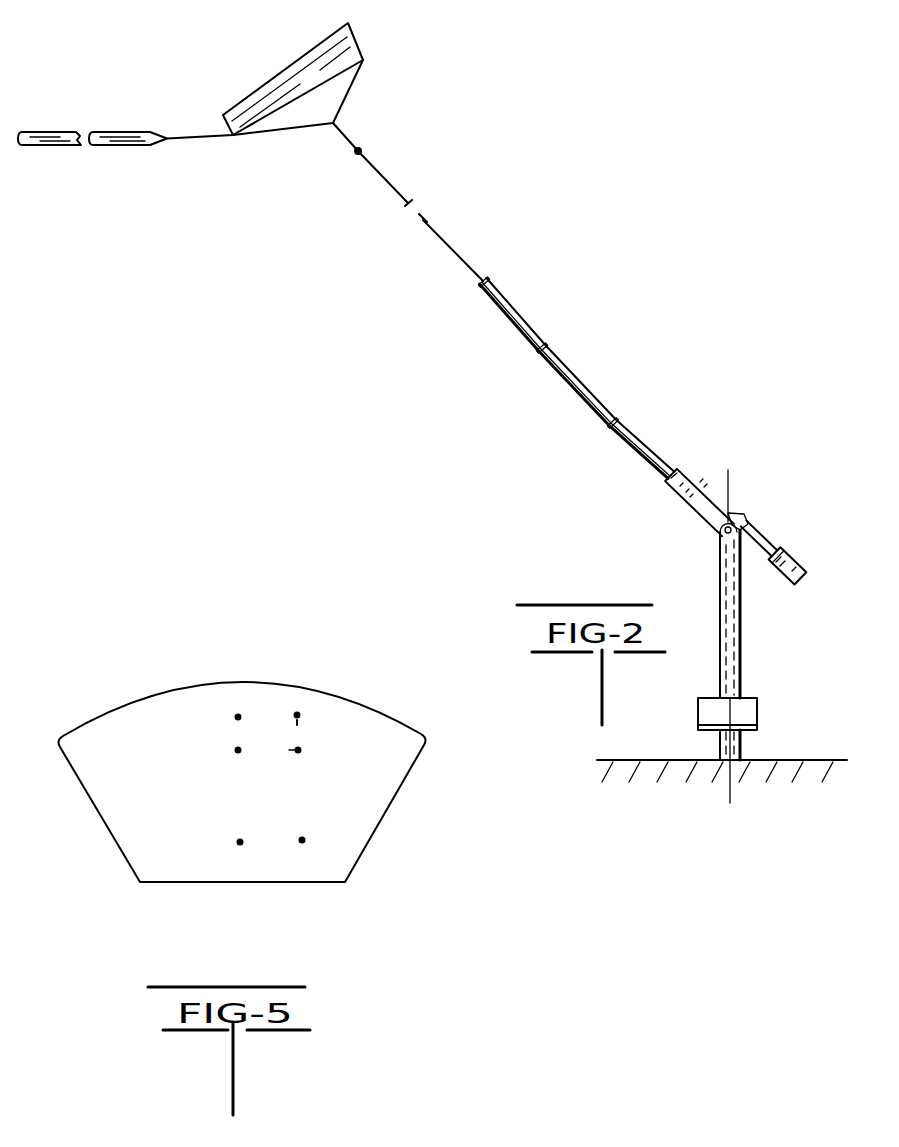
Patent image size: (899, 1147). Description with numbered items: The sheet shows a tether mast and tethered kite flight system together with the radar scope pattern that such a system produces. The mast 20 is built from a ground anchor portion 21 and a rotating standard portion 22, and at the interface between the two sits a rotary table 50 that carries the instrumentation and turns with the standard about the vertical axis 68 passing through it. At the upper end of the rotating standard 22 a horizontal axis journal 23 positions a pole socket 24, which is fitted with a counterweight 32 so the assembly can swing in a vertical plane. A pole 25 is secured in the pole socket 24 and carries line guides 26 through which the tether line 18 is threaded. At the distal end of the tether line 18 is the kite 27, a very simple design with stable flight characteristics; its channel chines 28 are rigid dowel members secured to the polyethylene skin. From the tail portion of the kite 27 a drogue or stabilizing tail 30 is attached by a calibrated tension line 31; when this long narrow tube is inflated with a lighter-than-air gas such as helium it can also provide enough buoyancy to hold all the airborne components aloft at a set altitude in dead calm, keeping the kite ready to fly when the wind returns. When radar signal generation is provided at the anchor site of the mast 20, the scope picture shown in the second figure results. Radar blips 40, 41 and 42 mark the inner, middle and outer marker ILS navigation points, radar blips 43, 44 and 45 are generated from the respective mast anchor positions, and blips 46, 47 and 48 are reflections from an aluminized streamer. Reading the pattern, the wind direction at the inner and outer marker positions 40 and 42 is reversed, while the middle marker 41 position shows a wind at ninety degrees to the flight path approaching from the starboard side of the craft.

In FIG. 2, the tether line 18 is at (465, 272).
In FIG. 2, the mast 20 is at (755, 500).
In FIG. 2, the ground anchor portion 21 is at (737, 755).
In FIG. 2, the rotating standard portion 22 is at (740, 625).
In FIG. 2, the horizontal axis journal 23 is at (747, 515).
In FIG. 2, the pole socket 24 is at (356, 137).
In FIG. 2, the pole 25 is at (565, 352).
In FIG. 2, the line guides 26 is at (613, 424).
In FIG. 2, the kite 27 is at (300, 56).
In FIG. 2, the channel chines 28 is at (307, 97).
In FIG. 2, the stabilizing tail 30 is at (127, 132).
In FIG. 2, the calibrated tension line 31 is at (175, 140).
In FIG. 2, the counterweight 32 is at (795, 565).
In FIG. 2, the rotary table 50 is at (752, 708).
In FIG. 2, the vertical axis 68 is at (731, 495).
In FIG. 5, the radar blip 40 is at (238, 717).
In FIG. 5, the radar blip 41 is at (238, 750).
In FIG. 5, the radar blip 42 is at (240, 842).
In FIG. 5, the radar blip 43 is at (299, 714).
In FIG. 5, the radar blip 44 is at (303, 750).
In FIG. 5, the radar blip 45 is at (302, 842).
In FIG. 5, the blip 46 is at (299, 722).
In FIG. 5, the blip 47 is at (292, 750).
In FIG. 5, the blip 48 is at (302, 838).